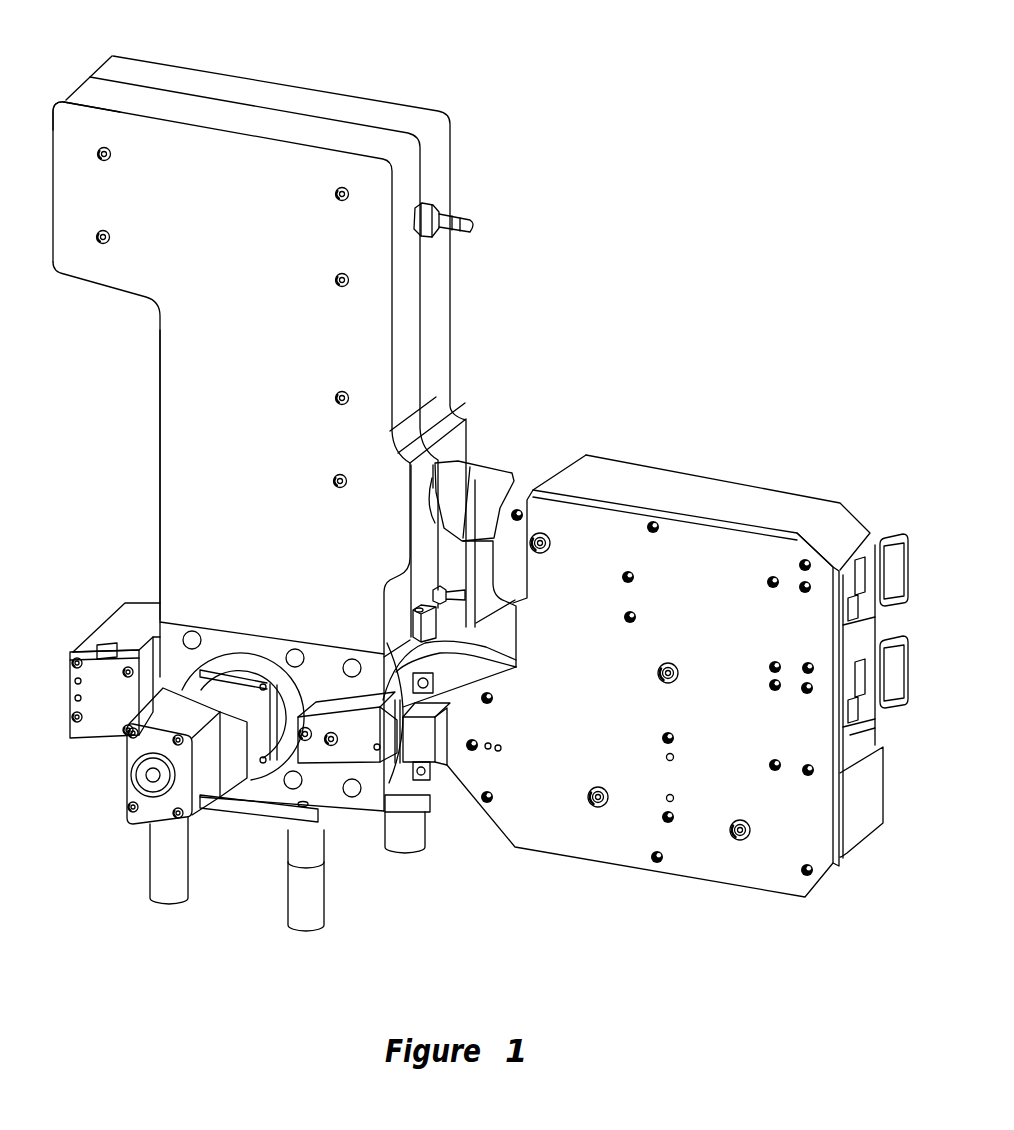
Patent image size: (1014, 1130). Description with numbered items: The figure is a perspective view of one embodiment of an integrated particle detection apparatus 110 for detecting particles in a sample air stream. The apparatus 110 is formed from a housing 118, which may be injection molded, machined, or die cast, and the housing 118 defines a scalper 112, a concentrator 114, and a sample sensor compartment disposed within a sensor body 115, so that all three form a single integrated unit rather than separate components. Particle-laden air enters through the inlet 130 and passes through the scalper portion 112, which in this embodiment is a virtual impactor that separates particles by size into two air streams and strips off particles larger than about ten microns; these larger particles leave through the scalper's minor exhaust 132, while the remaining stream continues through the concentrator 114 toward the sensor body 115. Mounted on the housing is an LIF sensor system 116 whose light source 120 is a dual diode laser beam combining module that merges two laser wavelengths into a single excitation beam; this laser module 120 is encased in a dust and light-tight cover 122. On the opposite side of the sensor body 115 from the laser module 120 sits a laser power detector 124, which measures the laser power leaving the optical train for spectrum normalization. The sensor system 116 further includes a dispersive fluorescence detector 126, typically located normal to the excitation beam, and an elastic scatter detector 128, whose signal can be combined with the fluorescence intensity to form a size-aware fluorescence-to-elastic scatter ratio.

The particle detection apparatus 110 is at (683, 204).
The scalper 112 is at (189, 211).
The concentrator 114 is at (258, 506).
The sensor body 115 is at (163, 672).
The sensor system 116 is at (363, 826).
The housing 118 is at (437, 298).
The light source 120 is at (706, 905).
The dust and light-tight cover 122 is at (710, 533).
The laser power detector 124 is at (124, 604).
The dispersive fluorescence detector 126 is at (480, 442).
The elastic scatter detector 128 is at (218, 806).
The inlet 130 is at (50, 167).
The scalper's minor exhaust 132 is at (462, 207).